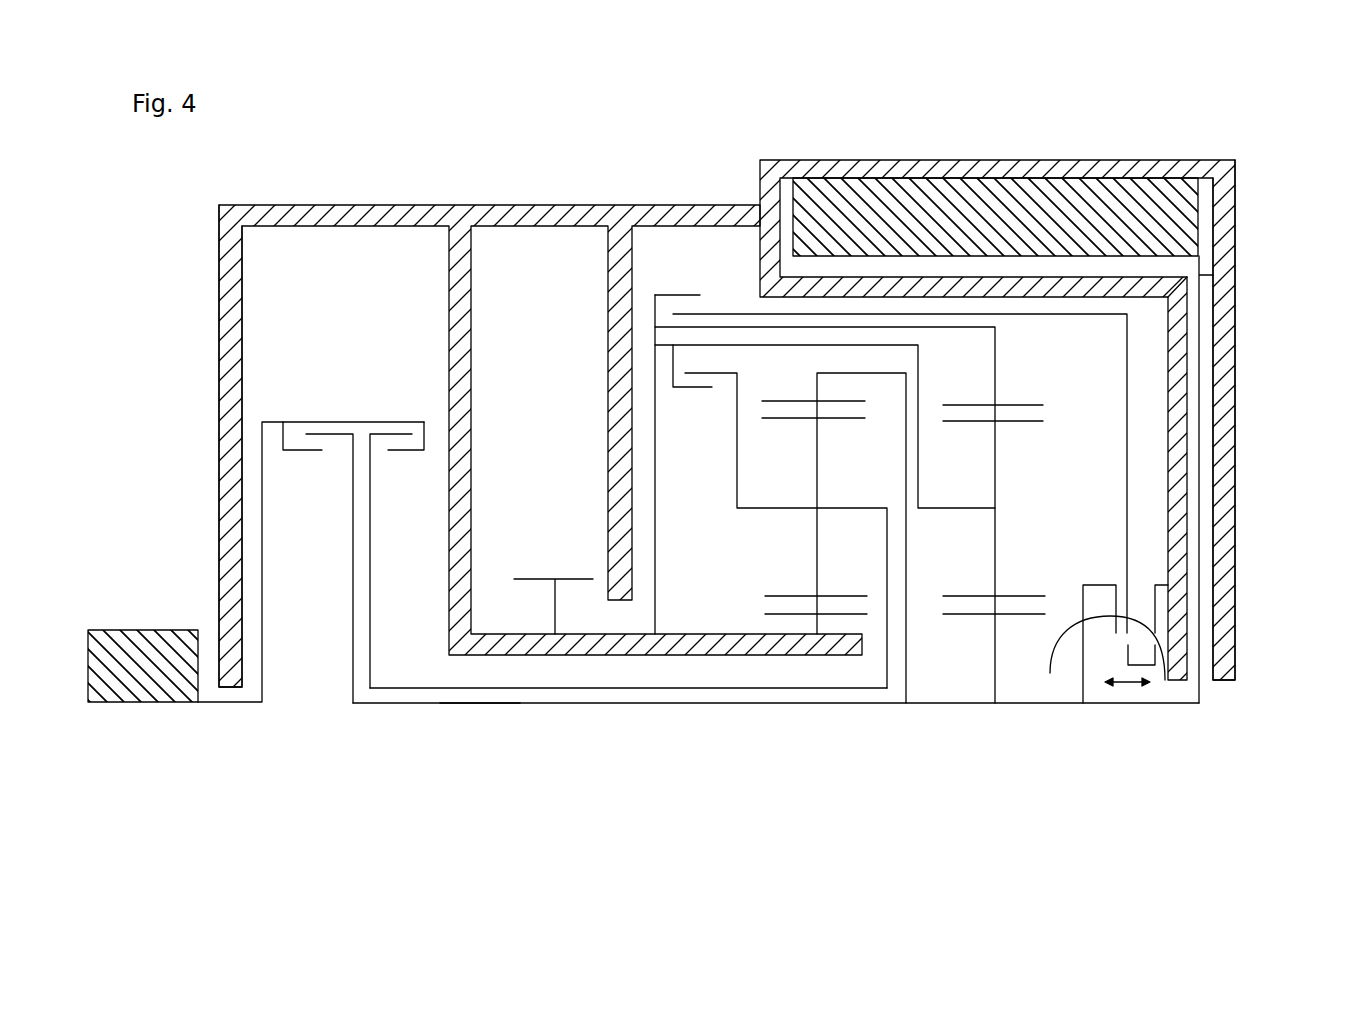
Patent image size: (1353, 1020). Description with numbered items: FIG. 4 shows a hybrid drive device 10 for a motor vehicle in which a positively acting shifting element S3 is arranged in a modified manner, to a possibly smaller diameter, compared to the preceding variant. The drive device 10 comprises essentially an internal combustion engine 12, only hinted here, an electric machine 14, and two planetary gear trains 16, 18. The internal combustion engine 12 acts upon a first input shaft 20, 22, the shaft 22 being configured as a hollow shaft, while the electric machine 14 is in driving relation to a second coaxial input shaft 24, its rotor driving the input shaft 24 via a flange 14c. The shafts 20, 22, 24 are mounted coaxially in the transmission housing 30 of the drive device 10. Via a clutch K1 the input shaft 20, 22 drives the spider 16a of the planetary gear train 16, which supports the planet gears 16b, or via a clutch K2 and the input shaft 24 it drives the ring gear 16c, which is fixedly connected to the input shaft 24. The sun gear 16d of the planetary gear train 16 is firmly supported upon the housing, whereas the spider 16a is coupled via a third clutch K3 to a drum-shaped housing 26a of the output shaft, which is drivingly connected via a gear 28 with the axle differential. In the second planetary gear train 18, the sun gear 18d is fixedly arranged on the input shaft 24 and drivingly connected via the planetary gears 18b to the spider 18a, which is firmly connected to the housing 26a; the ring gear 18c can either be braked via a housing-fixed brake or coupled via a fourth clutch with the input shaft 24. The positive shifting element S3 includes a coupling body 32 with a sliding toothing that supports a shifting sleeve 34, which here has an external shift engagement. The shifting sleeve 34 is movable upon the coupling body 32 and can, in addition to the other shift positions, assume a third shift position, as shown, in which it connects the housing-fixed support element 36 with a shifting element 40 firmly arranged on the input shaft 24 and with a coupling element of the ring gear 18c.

The hybrid drive device 10 is at (458, 172).
The internal combustion engine 12 is at (140, 630).
The electric machine 14 is at (1052, 173).
The flange 14c is at (1213, 272).
The planetary gear train 16 is at (825, 599).
The spider 16a is at (765, 508).
The planet gears 16b is at (817, 564).
The ring gear 16c is at (783, 402).
The sun gear 16d is at (913, 706).
The second planetary gear train 18 is at (1145, 468).
The spider 18a is at (953, 506).
The planetary gears 18b is at (995, 437).
The ring gear 18c is at (997, 366).
The sun gear 18d is at (1045, 598).
The first input shaft 20 is at (250, 703).
The first input shaft 22 is at (392, 704).
The second input shaft 24 is at (476, 704).
The drum-shaped housing 26a is at (655, 607).
The gear 28 is at (532, 580).
The transmission housing 30 is at (219, 349).
The coupling body 32 is at (1165, 680).
The shifting sleeve 34 is at (1135, 667).
The housing-fixed support element 36 is at (1158, 607).
The shifting element 40 is at (1050, 673).
The clutch K1 is at (382, 433).
The clutch K2 is at (322, 433).
The third clutch K3 is at (703, 375).
The positive shifting element S3 is at (1134, 555).